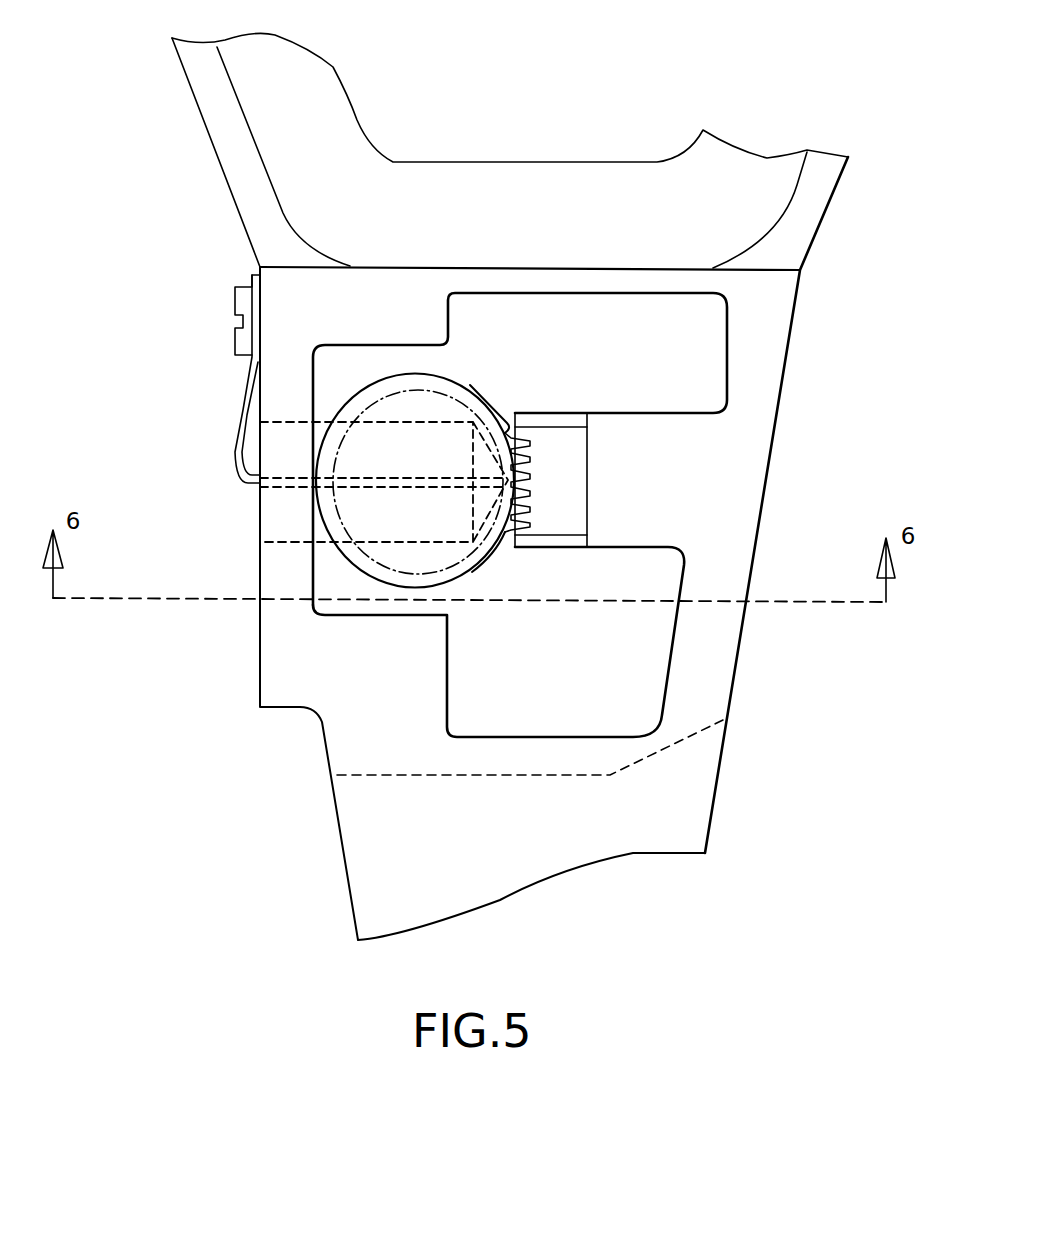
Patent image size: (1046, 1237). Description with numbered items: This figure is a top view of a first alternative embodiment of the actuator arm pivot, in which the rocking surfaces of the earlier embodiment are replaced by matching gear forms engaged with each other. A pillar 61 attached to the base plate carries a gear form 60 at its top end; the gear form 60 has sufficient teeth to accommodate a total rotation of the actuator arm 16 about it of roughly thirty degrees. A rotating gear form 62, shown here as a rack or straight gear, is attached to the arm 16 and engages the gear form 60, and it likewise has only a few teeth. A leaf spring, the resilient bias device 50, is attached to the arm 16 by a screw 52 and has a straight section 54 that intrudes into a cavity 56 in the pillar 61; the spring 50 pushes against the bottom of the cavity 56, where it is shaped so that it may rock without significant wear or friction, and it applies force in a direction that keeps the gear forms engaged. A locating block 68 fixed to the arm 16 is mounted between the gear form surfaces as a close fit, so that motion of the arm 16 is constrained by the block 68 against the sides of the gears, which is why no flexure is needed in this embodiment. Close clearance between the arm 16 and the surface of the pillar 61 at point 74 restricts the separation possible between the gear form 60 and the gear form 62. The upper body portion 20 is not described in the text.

The actuator arm 16 is at (273, 690).
The upper housing portion 20 is at (667, 198).
The leaf spring 50 is at (243, 412).
The screw 52 is at (240, 340).
The straight section 54 is at (377, 487).
The cavity 56 is at (393, 545).
The gear form 60 is at (468, 385).
The pillar 61 is at (417, 408).
The rotating gear form 62 is at (565, 477).
The locating block 68 is at (545, 418).
The point 74 is at (313, 497).